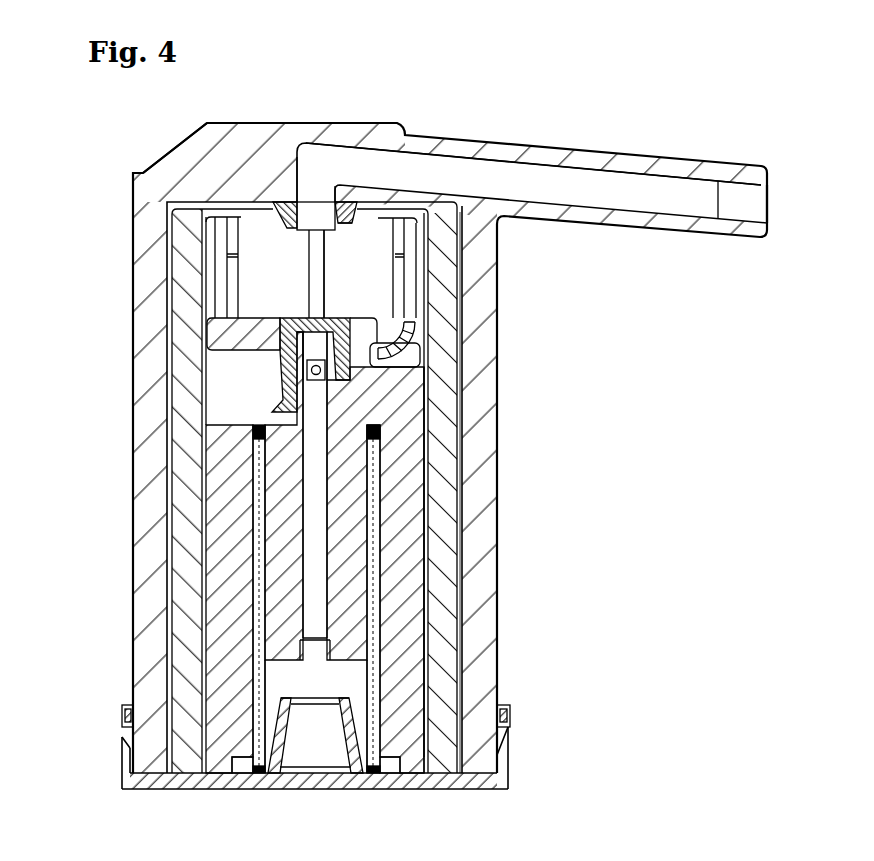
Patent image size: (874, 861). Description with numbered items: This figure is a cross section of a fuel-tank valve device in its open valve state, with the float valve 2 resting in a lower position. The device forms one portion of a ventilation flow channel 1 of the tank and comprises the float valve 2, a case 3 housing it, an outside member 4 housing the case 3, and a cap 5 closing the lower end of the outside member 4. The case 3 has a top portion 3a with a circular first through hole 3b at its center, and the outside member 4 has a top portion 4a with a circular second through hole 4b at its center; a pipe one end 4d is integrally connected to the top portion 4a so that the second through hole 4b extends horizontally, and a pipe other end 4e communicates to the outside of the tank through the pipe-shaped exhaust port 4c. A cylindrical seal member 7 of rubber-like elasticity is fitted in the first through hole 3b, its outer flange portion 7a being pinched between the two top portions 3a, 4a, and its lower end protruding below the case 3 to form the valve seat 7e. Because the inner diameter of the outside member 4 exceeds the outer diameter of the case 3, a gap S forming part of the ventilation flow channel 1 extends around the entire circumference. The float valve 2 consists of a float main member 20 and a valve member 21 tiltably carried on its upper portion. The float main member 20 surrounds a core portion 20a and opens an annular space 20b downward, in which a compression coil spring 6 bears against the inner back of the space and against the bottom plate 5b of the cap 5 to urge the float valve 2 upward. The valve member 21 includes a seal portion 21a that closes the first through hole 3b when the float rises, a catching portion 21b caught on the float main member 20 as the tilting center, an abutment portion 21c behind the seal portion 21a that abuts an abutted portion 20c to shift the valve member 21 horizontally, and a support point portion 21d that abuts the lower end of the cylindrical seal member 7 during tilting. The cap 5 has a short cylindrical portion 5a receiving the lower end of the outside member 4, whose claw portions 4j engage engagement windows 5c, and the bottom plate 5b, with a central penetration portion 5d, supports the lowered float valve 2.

The ventilation flow channel 1 is at (543, 162).
The float valve 2 is at (394, 495).
The case 3 is at (193, 528).
The top portion 3a is at (338, 201).
The first through hole 3b is at (360, 224).
The outside member 4 is at (150, 466).
The top portion 4a is at (172, 152).
The second through hole 4b is at (305, 211).
The exhaust port 4c is at (636, 150).
The pipe one end 4d is at (321, 161).
The pipe other end 4e is at (762, 198).
The claw portion 4j is at (122, 737).
The cap 5 is at (253, 790).
The short cylindrical portion 5a is at (510, 752).
The bottom plate 5b is at (397, 790).
The engagement window 5c is at (122, 758).
The penetration portion 5d is at (316, 790).
The compression coil spring 6 is at (376, 658).
The cylindrical seal member 7 is at (293, 226).
The outer flange portion 7a is at (282, 203).
The valve seat 7e is at (296, 236).
The float main member 20 is at (412, 578).
The core portion 20a is at (346, 490).
The annular space 20b is at (430, 605).
The abutted portion 20c is at (318, 392).
The valve member 21 is at (437, 340).
The seal portion 21a is at (324, 365).
The catching portion 21b is at (388, 357).
The abutment portion 21c is at (320, 374).
The support point portion 21d is at (335, 312).
The gap S is at (463, 518).